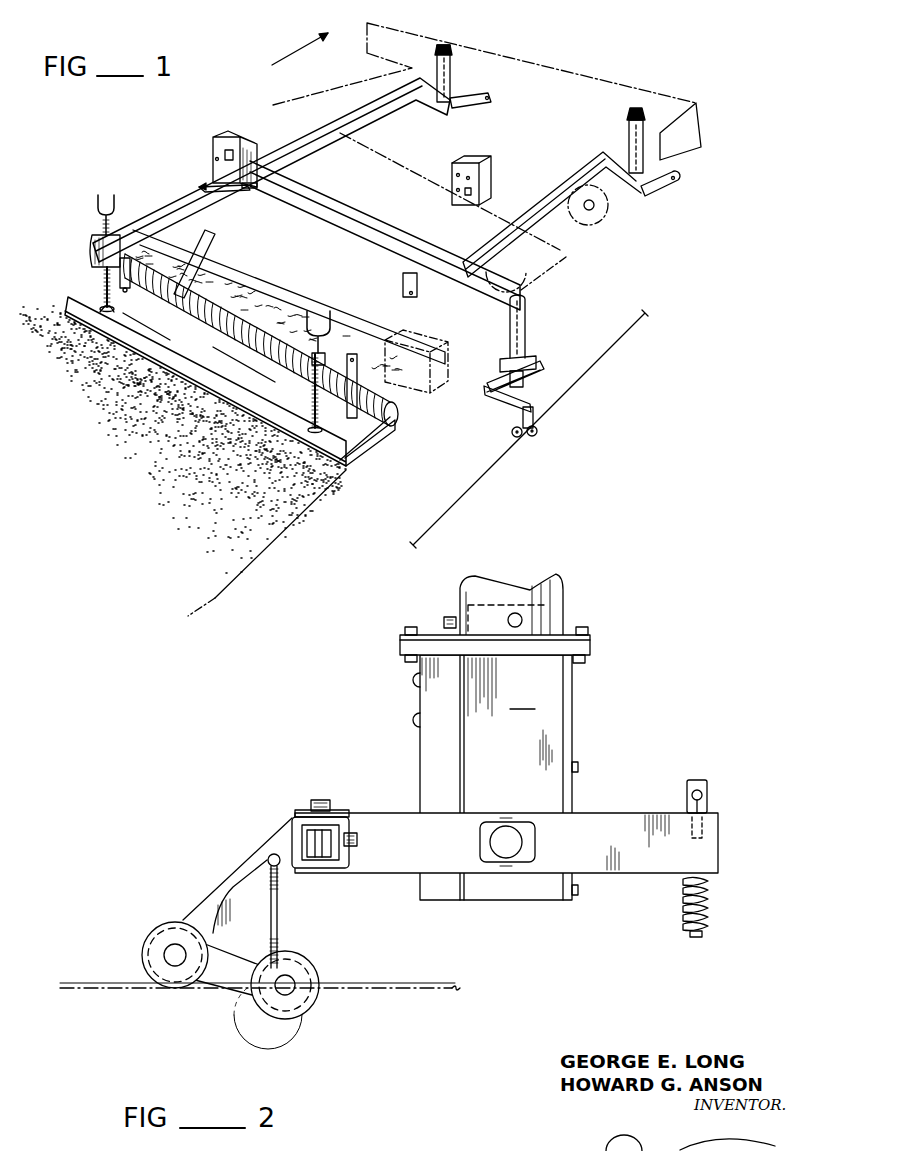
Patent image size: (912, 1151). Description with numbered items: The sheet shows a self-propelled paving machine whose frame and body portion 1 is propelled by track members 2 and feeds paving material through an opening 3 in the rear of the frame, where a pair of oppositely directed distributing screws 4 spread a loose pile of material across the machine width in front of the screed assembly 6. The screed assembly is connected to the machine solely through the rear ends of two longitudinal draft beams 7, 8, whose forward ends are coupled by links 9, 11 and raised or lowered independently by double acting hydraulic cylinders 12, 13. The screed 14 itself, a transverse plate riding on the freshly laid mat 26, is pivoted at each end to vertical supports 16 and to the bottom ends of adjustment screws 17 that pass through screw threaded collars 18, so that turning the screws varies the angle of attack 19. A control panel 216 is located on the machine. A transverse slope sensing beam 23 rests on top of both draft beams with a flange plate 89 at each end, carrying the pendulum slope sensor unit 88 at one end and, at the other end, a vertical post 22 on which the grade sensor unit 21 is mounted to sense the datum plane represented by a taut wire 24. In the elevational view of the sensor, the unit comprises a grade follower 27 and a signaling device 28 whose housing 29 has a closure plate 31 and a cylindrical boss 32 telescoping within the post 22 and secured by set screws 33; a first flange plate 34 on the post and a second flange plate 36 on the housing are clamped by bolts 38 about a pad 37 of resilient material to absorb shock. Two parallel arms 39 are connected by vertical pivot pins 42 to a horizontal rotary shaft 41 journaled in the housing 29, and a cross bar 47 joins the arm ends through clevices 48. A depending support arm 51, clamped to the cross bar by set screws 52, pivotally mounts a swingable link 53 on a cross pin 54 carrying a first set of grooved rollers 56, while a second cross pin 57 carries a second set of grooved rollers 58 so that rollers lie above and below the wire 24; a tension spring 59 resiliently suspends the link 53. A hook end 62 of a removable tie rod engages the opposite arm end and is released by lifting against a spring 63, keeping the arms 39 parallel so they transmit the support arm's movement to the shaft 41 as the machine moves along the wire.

In FIG. 1, the frame and body portion 1 is at (534, 72).
In FIG. 1, the track members 2 is at (566, 257).
In FIG. 1, the opening 3 is at (289, 290).
In FIG. 1, the distributing screws 4 is at (194, 328).
In FIG. 1, the screed assembly 6 is at (203, 385).
In FIG. 1, the draft beam 7 is at (304, 156).
In FIG. 1, the draft beam 8 is at (536, 220).
In FIG. 1, the link 9 is at (653, 190).
In FIG. 1, the link 11 is at (469, 97).
In FIG. 1, the double acting hydraulic cylinder 12 is at (628, 136).
In FIG. 1, the double acting hydraulic cylinder 13 is at (452, 62).
In FIG. 1, the screed 14 is at (353, 458).
In FIG. 1, the vertical supports 16 is at (125, 258).
In FIG. 1, the adjustment screws 17 is at (102, 290).
In FIG. 1, the screw threaded collars 18 is at (114, 236).
In FIG. 1, the angle of attack 19 is at (390, 436).
In FIG. 1, the grade sensor unit 21 is at (541, 353).
In FIG. 2, the grade sensor unit 21 is at (576, 723).
In FIG. 1, the vertical post 22 is at (525, 330).
In FIG. 2, the vertical post 22 is at (543, 583).
In FIG. 1, the transverse slope sensing beam 23 is at (388, 231).
In FIG. 1, the taut wire 24 is at (599, 367).
In FIG. 2, the taut wire 24 is at (361, 992).
In FIG. 1, the mat 26 is at (220, 612).
In FIG. 2, the grade follower 27 is at (394, 812).
In FIG. 2, the signaling device 28 is at (419, 751).
In FIG. 2, the housing 29 is at (522, 698).
In FIG. 2, the closure plate 31 is at (572, 697).
In FIG. 2, the cylindrical boss 32 is at (491, 608).
In FIG. 2, the set screws 33 is at (517, 613).
In FIG. 2, the first flange plate 34 is at (570, 634).
In FIG. 2, the second flange plate 36 is at (592, 656).
In FIG. 2, the pad of resilient material 37 is at (588, 644).
In FIG. 2, the bolts 38 is at (414, 627).
In FIG. 1, the parallel arms 39 is at (500, 380).
In FIG. 2, the parallel arms 39 is at (592, 866).
In FIG. 2, the horizontal rotary shaft 41 is at (513, 850).
In FIG. 2, the vertical pivot pins 42 is at (507, 812).
In FIG. 1, the cross bar 47 is at (502, 401).
In FIG. 2, the cross bar 47 is at (308, 823).
In FIG. 2, the clevices 48 is at (342, 809).
In FIG. 2, the depending support arm 51 is at (243, 870).
In FIG. 2, the set screws 52 is at (320, 800).
In FIG. 2, the swingable link 53 is at (236, 960).
In FIG. 2, the cross pin 54 is at (177, 944).
In FIG. 2, the first set of grooved rollers 56 is at (156, 938).
In FIG. 2, the second cross pin 57 is at (288, 979).
In FIG. 2, the second set of grooved rollers 58 is at (316, 988).
In FIG. 2, the tension spring 59 is at (282, 923).
In FIG. 2, the hook end 62 is at (692, 795).
In FIG. 2, the spring 63 is at (709, 893).
In FIG. 1, the pendulum slope sensor unit 88 is at (238, 135).
In FIG. 2, the pendulum slope sensor unit 88 is at (410, 678).
In FIG. 1, the flange plate 89 is at (227, 186).
In FIG. 2, the flange plate 89 is at (413, 718).
In FIG. 1, the control panel 216 is at (491, 163).